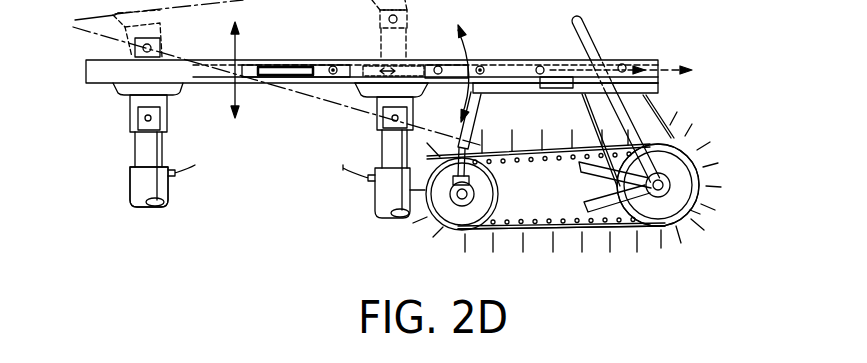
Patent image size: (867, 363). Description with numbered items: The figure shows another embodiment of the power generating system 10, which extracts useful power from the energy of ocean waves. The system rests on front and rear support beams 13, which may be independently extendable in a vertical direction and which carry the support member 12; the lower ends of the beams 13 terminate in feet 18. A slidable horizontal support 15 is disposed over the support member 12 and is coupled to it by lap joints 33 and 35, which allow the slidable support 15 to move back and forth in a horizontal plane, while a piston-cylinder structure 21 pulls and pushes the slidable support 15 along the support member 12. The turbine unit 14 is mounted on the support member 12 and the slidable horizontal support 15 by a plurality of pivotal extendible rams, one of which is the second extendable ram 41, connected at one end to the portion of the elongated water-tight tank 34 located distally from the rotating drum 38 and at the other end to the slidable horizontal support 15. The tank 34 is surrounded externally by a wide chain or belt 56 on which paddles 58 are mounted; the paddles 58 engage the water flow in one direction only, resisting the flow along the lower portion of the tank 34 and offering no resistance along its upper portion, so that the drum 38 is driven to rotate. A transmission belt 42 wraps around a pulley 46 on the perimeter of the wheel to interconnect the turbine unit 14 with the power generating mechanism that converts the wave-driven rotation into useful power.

The power generating system 10 is at (668, 108).
The support member 12 is at (268, 92).
The support beams 13 is at (124, 148).
The turbine unit 14 is at (712, 178).
The slidable horizontal support 15 is at (642, 61).
The foot 18 is at (130, 171).
The piston-cylinder structure 21 is at (357, 85).
The lap joint 33 is at (279, 60).
The elongated water-tight tank 34 is at (562, 172).
The lap joint 35 is at (531, 70).
The rotating drum 38 is at (450, 208).
The second extendable ram 41 is at (483, 126).
The transmission belt 42 is at (667, 125).
The pulley 46 is at (684, 218).
The belt 56 is at (624, 236).
The paddles 58 is at (706, 200).